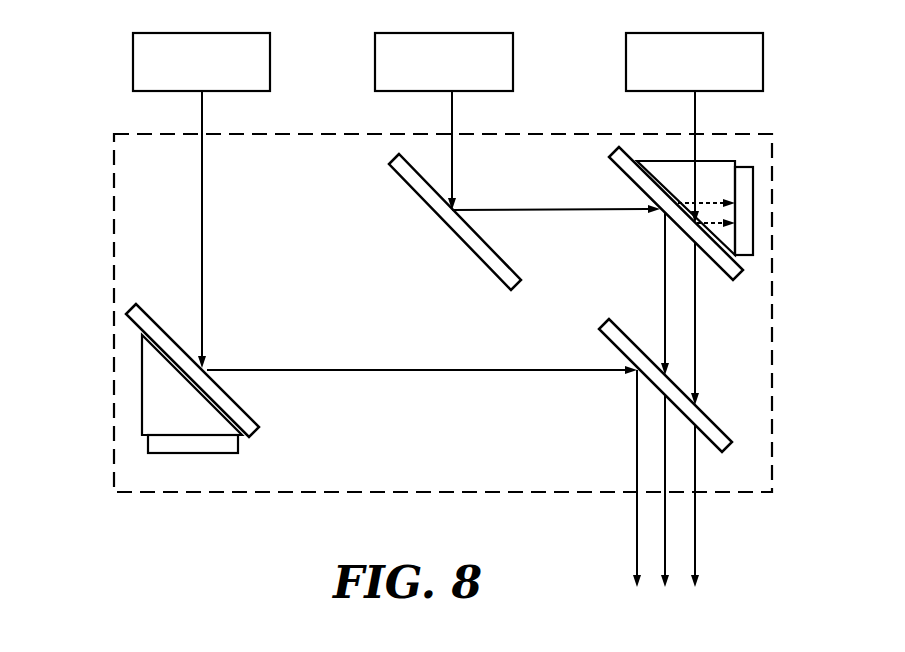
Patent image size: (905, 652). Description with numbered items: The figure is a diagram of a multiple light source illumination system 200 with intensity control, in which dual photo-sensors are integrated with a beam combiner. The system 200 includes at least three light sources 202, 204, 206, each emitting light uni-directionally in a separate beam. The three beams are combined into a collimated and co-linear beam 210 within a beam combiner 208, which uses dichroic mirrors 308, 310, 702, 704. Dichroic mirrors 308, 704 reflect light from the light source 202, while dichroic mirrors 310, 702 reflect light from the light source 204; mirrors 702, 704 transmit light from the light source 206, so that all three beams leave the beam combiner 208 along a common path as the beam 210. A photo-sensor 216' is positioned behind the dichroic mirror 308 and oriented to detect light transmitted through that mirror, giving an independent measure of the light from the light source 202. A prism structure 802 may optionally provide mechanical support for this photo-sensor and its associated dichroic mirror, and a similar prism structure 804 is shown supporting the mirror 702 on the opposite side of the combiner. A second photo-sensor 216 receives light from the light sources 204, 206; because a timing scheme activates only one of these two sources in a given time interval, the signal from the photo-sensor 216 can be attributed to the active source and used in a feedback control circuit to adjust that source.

The system 200 is at (470, 480).
The light source 202 is at (210, 33).
The light source 204 is at (442, 33).
The light source 206 is at (672, 33).
The beam combiner 208 is at (114, 205).
The collimated and co-linear beam 210 is at (635, 500).
The second photo-sensor 216 is at (799, 207).
The photo-sensor 216' is at (139, 463).
The dichroic mirror 308 is at (245, 403).
The dichroic mirror 310 is at (412, 192).
The dichroic mirror 702 is at (623, 170).
The dichroic mirror 704 is at (608, 343).
The prism structure 802 is at (142, 390).
The prism 804 is at (660, 158).